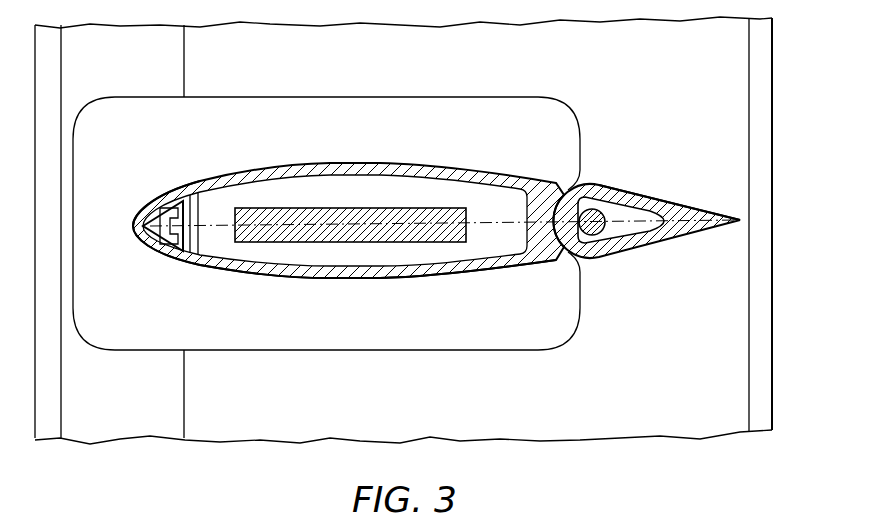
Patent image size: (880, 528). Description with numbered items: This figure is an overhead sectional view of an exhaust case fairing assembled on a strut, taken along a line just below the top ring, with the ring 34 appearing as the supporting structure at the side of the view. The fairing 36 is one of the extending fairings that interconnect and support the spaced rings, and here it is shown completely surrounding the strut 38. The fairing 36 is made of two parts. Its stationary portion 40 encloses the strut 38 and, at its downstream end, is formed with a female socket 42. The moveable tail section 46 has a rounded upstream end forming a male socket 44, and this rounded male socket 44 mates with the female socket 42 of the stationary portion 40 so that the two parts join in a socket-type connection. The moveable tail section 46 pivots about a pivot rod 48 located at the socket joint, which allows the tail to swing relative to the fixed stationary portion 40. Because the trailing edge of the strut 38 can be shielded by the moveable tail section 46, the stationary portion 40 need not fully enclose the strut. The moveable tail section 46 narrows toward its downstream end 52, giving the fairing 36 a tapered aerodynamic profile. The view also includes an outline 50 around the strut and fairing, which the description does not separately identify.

The ring 34 is at (733, 313).
The fairing 36 is at (612, 177).
The strut 38 is at (317, 243).
The stationary portion 40 is at (200, 270).
The female socket 42 is at (553, 181).
The male socket 44 is at (556, 262).
The moveable tail section 46 is at (657, 244).
The pivot rod 48 is at (603, 211).
The housing 50 is at (526, 352).
The downstream end 52 is at (702, 206).